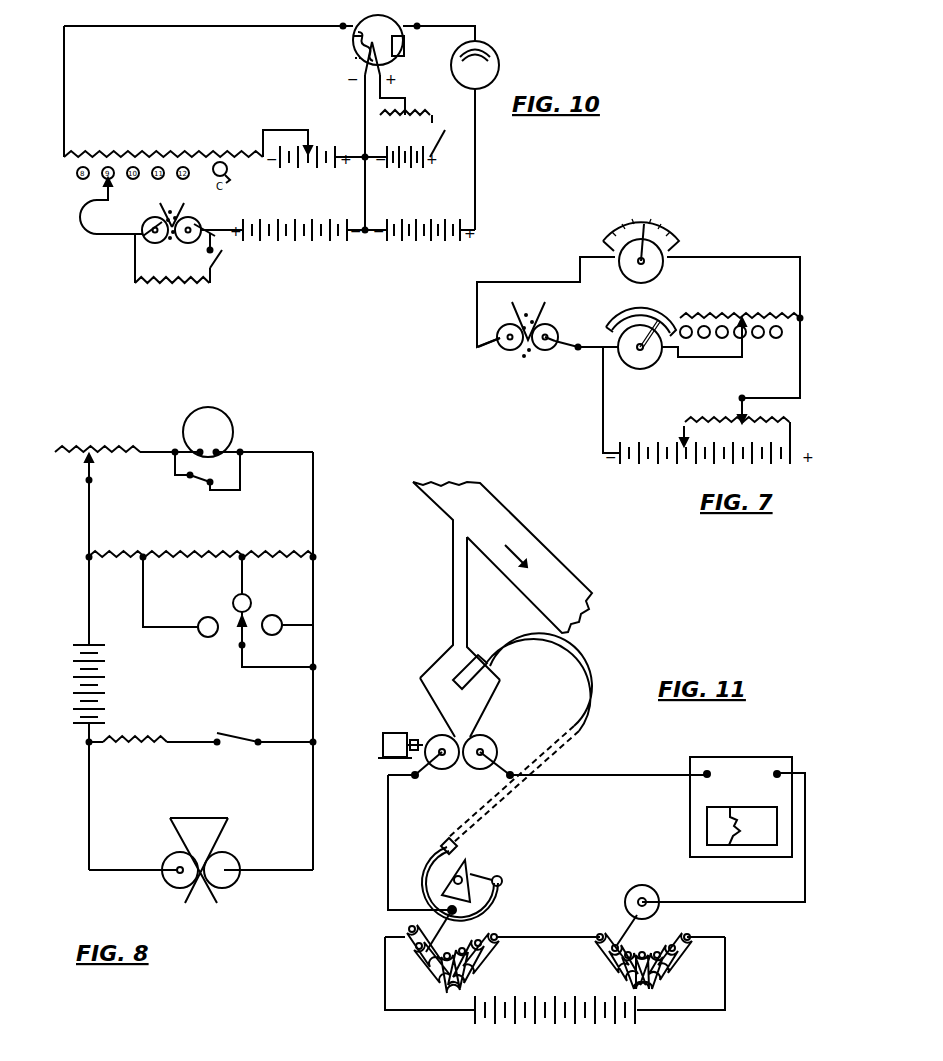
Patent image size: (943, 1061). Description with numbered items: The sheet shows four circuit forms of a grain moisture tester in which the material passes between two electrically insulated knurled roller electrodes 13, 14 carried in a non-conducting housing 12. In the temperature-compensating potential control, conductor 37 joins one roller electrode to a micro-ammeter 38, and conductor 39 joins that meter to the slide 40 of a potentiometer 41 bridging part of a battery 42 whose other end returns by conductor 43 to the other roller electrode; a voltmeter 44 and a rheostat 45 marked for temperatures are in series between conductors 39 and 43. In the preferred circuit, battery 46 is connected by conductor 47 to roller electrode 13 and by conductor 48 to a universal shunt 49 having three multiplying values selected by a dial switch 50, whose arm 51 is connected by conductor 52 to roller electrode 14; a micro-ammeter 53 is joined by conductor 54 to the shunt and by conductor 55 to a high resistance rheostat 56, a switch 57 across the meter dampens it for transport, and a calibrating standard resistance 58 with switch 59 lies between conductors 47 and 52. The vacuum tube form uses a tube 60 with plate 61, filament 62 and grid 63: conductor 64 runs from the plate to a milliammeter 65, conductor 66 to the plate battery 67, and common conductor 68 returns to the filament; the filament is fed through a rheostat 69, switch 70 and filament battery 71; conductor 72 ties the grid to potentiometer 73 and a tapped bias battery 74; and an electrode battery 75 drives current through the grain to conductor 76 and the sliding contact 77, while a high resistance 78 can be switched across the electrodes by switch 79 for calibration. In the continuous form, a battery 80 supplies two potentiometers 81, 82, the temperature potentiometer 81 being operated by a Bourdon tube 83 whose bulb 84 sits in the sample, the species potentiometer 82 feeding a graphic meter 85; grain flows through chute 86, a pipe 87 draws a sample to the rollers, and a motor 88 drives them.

In FIG. 8, the housing 12 is at (204, 818).
In FIG. 10, the roller electrode 13 is at (196, 219).
In FIG. 7, the roller electrode 13 is at (504, 349).
In FIG. 8, the roller electrode 13 is at (175, 857).
In FIG. 11, the roller electrode 13 is at (443, 766).
In FIG. 10, the roller electrode 14 is at (148, 218).
In FIG. 7, the roller electrode 14 is at (546, 349).
In FIG. 8, the roller electrode 14 is at (236, 857).
In FIG. 11, the roller electrode 14 is at (469, 767).
In FIG. 7, the conductor 37 is at (565, 280).
In FIG. 7, the micro-ammeter 38 is at (620, 266).
In FIG. 7, the conductor 39 is at (764, 258).
In FIG. 7, the slide 40 is at (737, 408).
In FIG. 7, the potentiometer 41 is at (687, 424).
In FIG. 7, the battery 42 is at (692, 464).
In FIG. 7, the conductor 43 is at (603, 416).
In FIG. 7, the voltmeter 44 is at (614, 344).
In FIG. 7, the rheostat 45 is at (767, 316).
In FIG. 8, the battery 46 is at (106, 702).
In FIG. 8, the conductor 47 is at (90, 805).
In FIG. 8, the conductor 48 is at (89, 600).
In FIG. 8, the universal shunt 49 is at (174, 552).
In FIG. 8, the dial switch 50 is at (208, 644).
In FIG. 8, the dial switch arm 51 is at (246, 640).
In FIG. 8, the conductor 52 is at (313, 716).
In FIG. 8, the micro-ammeter 53 is at (233, 435).
In FIG. 8, the conductor 54 is at (313, 490).
In FIG. 8, the conductor 55 is at (156, 450).
In FIG. 8, the high resistance rheostat 56 is at (86, 443).
In FIG. 8, the switch 57 is at (194, 485).
In FIG. 8, the calibrating standard resistance 58 is at (163, 748).
In FIG. 8, the switch 59 is at (240, 747).
In FIG. 10, the vacuum tube 60 is at (392, 22).
In FIG. 10, the plate 61 is at (413, 43).
In FIG. 10, the filament 62 is at (352, 58).
In FIG. 10, the grid 63 is at (352, 35).
In FIG. 10, the conductor 64 is at (443, 22).
In FIG. 10, the milliammeter 65 is at (500, 66).
In FIG. 10, the conductor 66 is at (477, 171).
In FIG. 10, the plate battery 67 is at (437, 248).
In FIG. 10, the conductor 68 is at (363, 195).
In FIG. 10, the rheostat 69 is at (412, 112).
In FIG. 10, the switch 70 is at (447, 142).
In FIG. 10, the filament battery 71 is at (404, 172).
In FIG. 10, the conductor 72 is at (160, 26).
In FIG. 10, the potentiometer 73 is at (172, 151).
In FIG. 10, the tapped bias battery 74 is at (300, 173).
In FIG. 10, the battery 75 is at (296, 252).
In FIG. 10, the conductor 76 is at (95, 229).
In FIG. 10, the sliding contact 77 is at (111, 188).
In FIG. 10, the high resistance 78 is at (175, 287).
In FIG. 10, the switch 79 is at (222, 263).
In FIG. 11, the battery 80 is at (555, 1025).
In FIG. 11, the potentiometer 81 is at (447, 958).
In FIG. 11, the potentiometer 82 is at (643, 939).
In FIG. 11, the Bourdon tube 83 is at (432, 863).
In FIG. 11, the bulb 84 is at (464, 670).
In FIG. 11, the graphic meter 85 is at (743, 766).
In FIG. 11, the chute 86 is at (502, 557).
In FIG. 11, the pipe 87 is at (453, 601).
In FIG. 11, the motor 88 is at (397, 730).